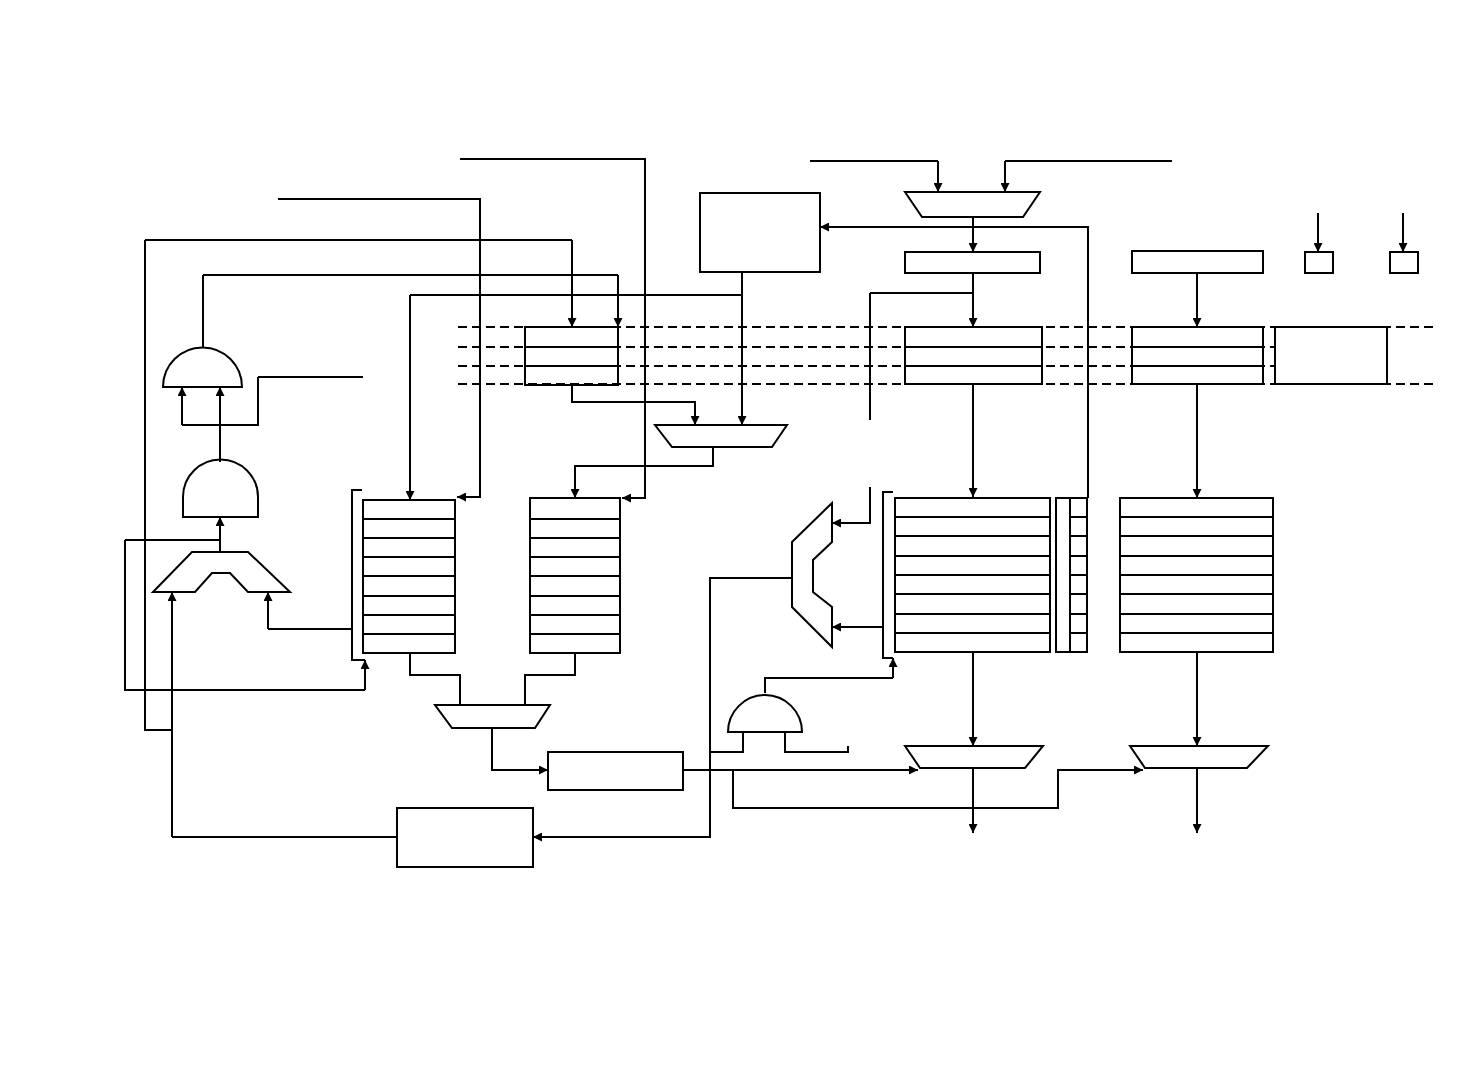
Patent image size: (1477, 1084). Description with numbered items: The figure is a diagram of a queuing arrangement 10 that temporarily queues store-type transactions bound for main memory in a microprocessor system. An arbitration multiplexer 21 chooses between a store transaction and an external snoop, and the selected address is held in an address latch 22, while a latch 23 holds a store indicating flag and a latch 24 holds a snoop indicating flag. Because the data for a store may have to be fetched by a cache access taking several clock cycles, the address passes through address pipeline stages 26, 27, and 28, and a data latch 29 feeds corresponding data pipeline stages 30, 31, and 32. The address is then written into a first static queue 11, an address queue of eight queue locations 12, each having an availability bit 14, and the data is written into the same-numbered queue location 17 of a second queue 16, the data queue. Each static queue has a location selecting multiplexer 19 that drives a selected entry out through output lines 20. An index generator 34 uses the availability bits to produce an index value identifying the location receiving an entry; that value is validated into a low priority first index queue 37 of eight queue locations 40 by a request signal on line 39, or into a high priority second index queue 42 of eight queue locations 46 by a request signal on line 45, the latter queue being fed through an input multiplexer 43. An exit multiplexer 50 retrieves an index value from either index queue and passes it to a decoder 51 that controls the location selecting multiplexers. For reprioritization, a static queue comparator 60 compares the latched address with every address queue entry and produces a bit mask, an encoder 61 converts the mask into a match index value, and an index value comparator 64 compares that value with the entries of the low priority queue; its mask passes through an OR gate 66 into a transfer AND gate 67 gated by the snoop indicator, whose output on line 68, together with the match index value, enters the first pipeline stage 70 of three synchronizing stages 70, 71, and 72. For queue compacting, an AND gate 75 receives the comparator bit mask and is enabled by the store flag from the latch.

The queuing arrangement 10 is at (1258, 122).
The first static queue 11 is at (993, 495).
The queue location 12 is at (1005, 625).
The availability bit 14 is at (1082, 623).
The second queue 16 is at (1240, 495).
The queue location 17 is at (1273, 605).
The location selecting multiplexer 19 is at (1038, 746).
The output lines 20 is at (975, 797).
The arbitration multiplexer 21 is at (1040, 192).
The address latch 22 is at (1033, 249).
The latch 23 is at (1322, 266).
The latch 24 is at (1407, 266).
The address pipeline stage 26 is at (993, 334).
The address pipeline stage 27 is at (1020, 351).
The address pipeline stage 28 is at (1010, 377).
The data latch 29 is at (1190, 251).
The data pipeline stage 30 is at (1213, 333).
The data pipeline stage 31 is at (1238, 352).
The data pipeline stage 32 is at (1230, 375).
The index generator 34 is at (820, 204).
The first index queue 37 is at (385, 494).
The line 39 is at (483, 215).
The queue location 40 is at (447, 605).
The second index queue 42 is at (630, 543).
The input multiplexer 43 is at (782, 428).
The line 45 is at (645, 215).
The queue location 46 is at (613, 605).
The exit multiplexer 50 is at (437, 705).
The decoder 51 is at (603, 750).
The static queue comparator 60 is at (792, 542).
The encoder 61 is at (435, 806).
The index value comparator 64 is at (263, 557).
The OR gate 66 is at (240, 463).
The transfer AND gate 67 is at (217, 344).
The line 68 is at (203, 305).
The first pipeline stage 70 is at (550, 337).
The synchronizing pipeline stage 71 is at (555, 358).
The synchronizing pipeline stage 72 is at (565, 378).
The AND gate 75 is at (738, 704).